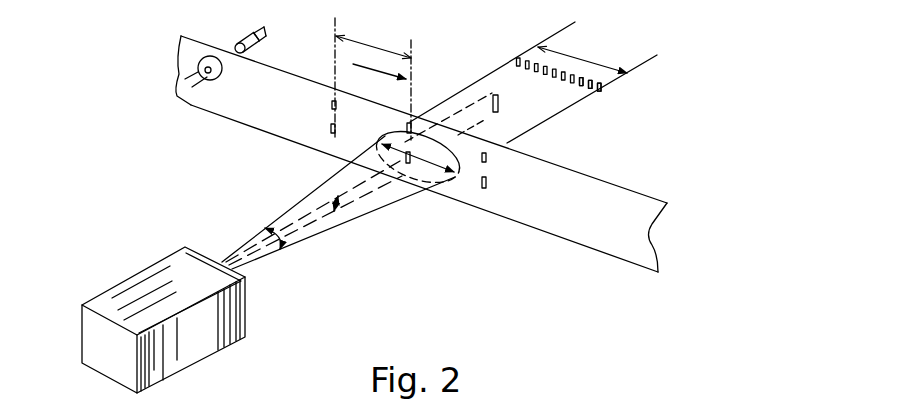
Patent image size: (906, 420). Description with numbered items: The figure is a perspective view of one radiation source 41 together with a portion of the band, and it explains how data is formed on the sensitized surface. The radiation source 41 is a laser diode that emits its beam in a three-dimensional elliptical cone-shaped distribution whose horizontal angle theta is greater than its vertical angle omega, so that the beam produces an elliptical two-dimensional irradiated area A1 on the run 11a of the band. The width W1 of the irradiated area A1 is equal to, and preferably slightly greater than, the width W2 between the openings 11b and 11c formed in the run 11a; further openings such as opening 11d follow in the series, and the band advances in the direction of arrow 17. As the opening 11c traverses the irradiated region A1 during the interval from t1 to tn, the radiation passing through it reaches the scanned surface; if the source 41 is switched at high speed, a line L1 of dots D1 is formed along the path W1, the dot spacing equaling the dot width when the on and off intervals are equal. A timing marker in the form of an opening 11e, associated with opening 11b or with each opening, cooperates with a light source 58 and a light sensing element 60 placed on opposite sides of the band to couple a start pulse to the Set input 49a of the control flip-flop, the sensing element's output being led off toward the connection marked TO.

The run of band 11a is at (612, 256).
The opening 11b is at (331, 129).
The opening 11c is at (410, 157).
The opening 11d is at (486, 190).
The timing marker opening 11e is at (332, 104).
The direction of tape movement 17 is at (375, 77).
The radiation source 41 is at (138, 277).
The Set input of bistable flip-flop 49a is at (279, 48).
The light source 58 is at (198, 65).
The light sensing element 60 is at (238, 42).
The output connection TO is at (283, 31).
The width of irradiated area W1 is at (377, 144).
The width between openings W2 is at (373, 38).
The irradiated area A1 is at (452, 178).
The start time t1 is at (566, 57).
The end time tn is at (627, 83).
The line of dots L1 is at (599, 90).
The dot D1 is at (581, 82).